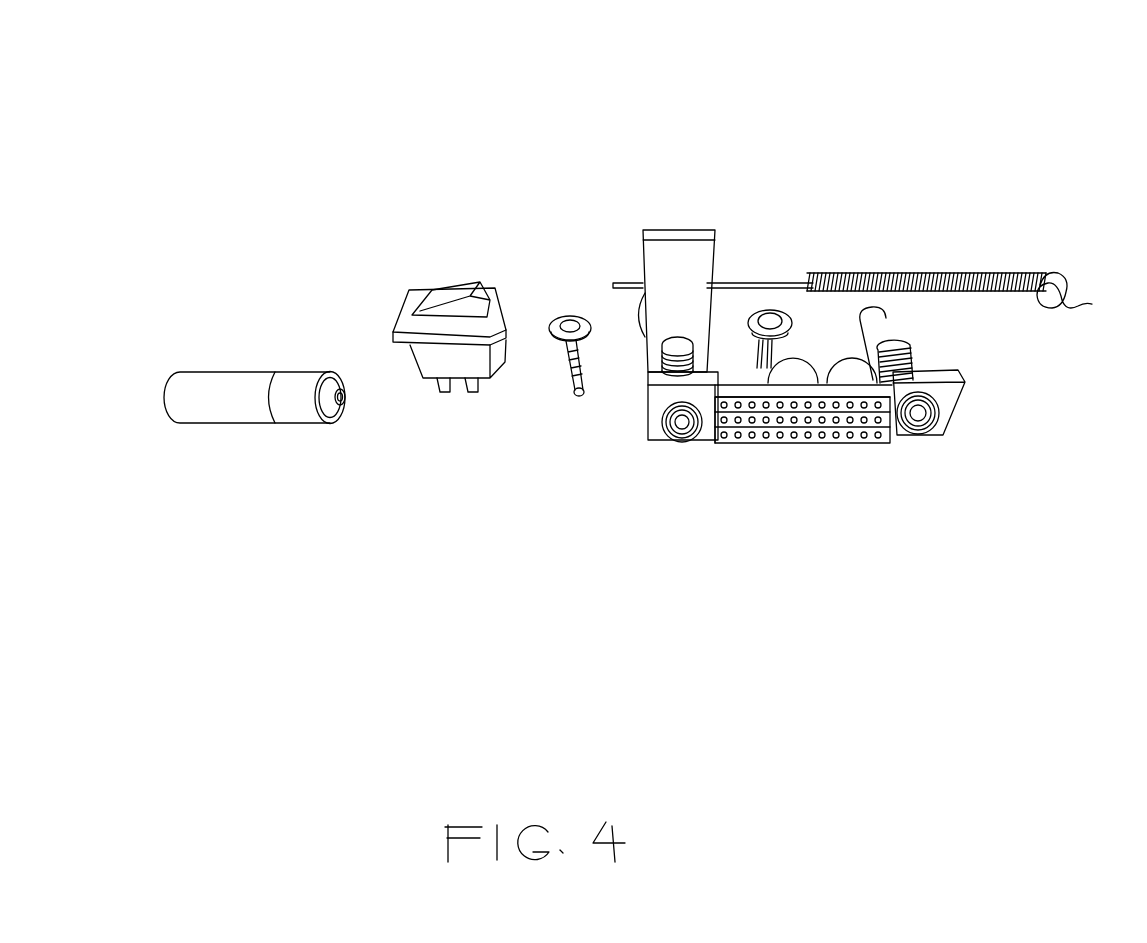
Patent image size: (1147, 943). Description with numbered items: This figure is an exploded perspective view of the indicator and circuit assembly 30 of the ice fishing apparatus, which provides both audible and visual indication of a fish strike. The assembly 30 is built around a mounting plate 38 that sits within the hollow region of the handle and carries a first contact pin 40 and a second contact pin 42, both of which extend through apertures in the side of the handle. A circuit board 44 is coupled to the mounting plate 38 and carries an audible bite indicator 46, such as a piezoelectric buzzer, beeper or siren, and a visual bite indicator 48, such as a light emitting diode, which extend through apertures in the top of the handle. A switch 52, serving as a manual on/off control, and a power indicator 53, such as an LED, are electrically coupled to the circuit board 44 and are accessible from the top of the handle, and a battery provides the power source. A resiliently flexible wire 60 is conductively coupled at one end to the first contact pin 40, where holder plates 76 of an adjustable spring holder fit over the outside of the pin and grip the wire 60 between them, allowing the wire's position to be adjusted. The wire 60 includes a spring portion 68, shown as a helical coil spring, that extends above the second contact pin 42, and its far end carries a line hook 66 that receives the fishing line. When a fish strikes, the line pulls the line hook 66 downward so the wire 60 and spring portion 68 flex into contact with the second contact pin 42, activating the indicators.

The indicator and circuit assembly 30 is at (957, 50).
The mounting plate 38 is at (663, 397).
The first contact pin 40 is at (662, 361).
The second contact pin 42 is at (891, 328).
The circuit board 44 is at (787, 440).
The audible bite indicator 46 is at (853, 362).
The visual bite indicator 48 is at (778, 318).
The switch 52 is at (443, 288).
The power indicator 53 is at (567, 313).
The resiliently flexible wire 60 is at (778, 283).
The line hook 66 is at (1091, 294).
The spring portion 68 is at (938, 272).
The holder plates 76 is at (682, 230).